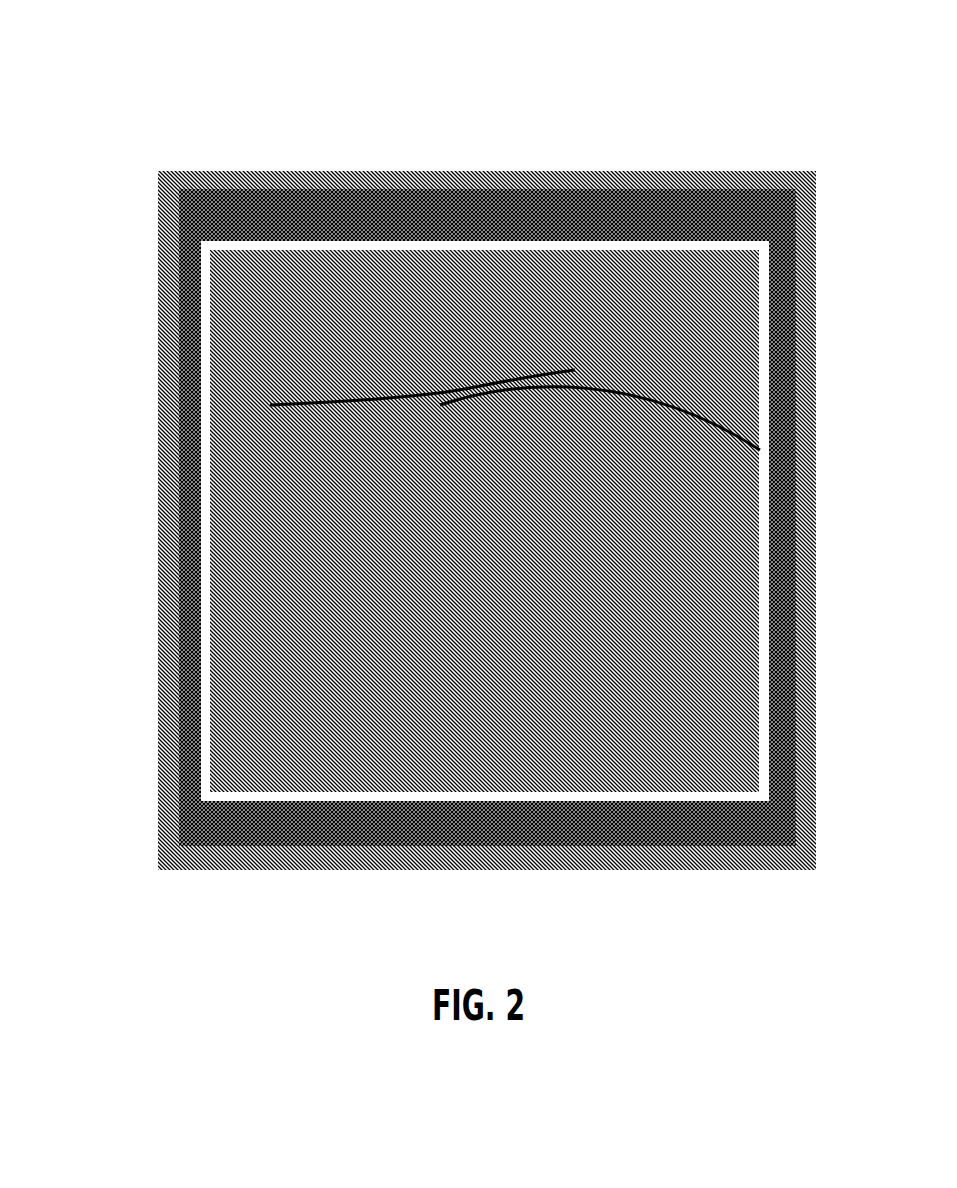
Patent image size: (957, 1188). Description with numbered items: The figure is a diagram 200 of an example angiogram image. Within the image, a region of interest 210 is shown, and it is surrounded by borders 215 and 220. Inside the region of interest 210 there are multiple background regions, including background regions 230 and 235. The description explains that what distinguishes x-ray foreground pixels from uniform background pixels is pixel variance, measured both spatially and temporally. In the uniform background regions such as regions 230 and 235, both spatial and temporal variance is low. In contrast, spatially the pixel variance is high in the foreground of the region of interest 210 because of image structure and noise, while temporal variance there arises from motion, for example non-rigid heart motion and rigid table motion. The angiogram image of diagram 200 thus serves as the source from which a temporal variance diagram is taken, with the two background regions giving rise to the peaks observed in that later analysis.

The diagram 200 is at (490, 44).
The region of interest 210 is at (212, 657).
The border 215 is at (723, 243).
The border 220 is at (435, 171).
The background region 230 is at (262, 392).
The background region 235 is at (589, 372).